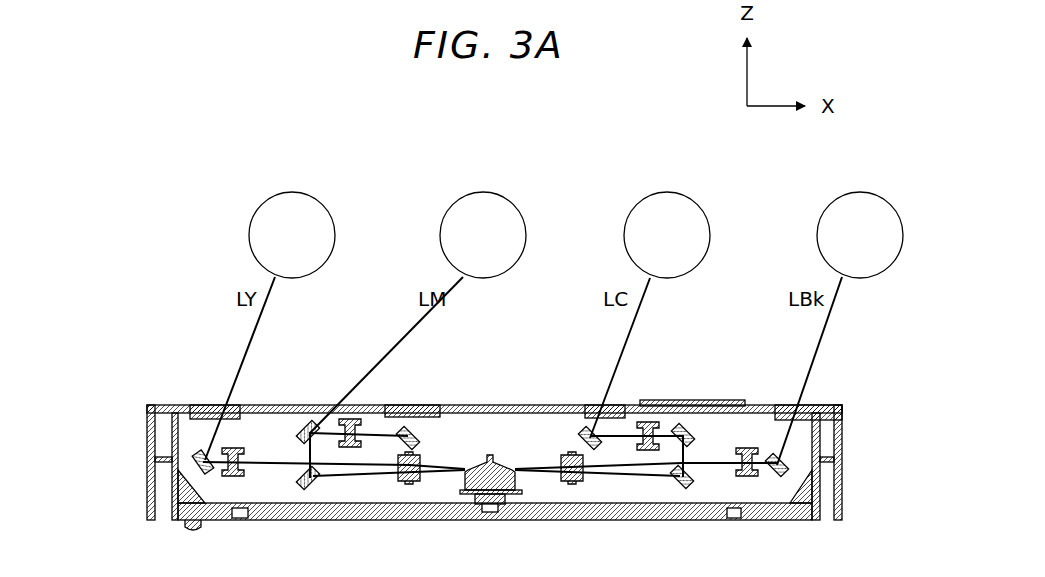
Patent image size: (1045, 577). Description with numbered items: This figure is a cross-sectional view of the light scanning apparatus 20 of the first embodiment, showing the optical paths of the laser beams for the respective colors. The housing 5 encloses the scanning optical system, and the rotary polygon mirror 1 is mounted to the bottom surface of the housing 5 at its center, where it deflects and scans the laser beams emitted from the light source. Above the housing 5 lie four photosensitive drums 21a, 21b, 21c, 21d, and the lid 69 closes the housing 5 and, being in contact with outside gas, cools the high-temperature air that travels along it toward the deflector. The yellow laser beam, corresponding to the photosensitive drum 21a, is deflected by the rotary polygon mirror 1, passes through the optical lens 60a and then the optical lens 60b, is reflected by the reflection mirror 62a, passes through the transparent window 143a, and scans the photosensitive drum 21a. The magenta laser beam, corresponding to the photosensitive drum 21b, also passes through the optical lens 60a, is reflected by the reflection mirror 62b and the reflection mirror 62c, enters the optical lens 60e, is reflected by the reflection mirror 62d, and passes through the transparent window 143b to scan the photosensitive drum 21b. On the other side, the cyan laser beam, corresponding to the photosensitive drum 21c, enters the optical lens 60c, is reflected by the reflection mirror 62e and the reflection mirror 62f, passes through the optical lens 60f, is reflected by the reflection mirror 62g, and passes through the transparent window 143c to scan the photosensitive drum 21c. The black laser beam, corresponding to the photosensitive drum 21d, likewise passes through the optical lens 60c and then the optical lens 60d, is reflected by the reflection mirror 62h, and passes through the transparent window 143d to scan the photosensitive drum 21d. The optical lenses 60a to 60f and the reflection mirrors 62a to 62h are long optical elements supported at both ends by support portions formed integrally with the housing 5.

The rotary polygon mirror 1 is at (497, 463).
The housing 5 is at (640, 521).
The light scanning apparatus 20 is at (142, 448).
The photosensitive drum 21a is at (298, 192).
The photosensitive drum 21b is at (490, 192).
The photosensitive drum 21c is at (674, 192).
The photosensitive drum 21d is at (867, 192).
The optical lens 60a is at (410, 484).
The optical lens 60b is at (240, 448).
The optical lens 60c is at (572, 484).
The optical lens 60d is at (748, 477).
The optical lens 60e is at (352, 419).
The optical lens 60f is at (648, 422).
The reflection mirror 62a is at (193, 467).
The reflection mirror 62b is at (306, 487).
The reflection mirror 62c is at (308, 424).
The reflection mirror 62d is at (418, 438).
The reflection mirror 62e is at (686, 486).
The reflection mirror 62f is at (694, 436).
The reflection mirror 62g is at (584, 430).
The reflection mirror 62h is at (782, 475).
The lid 69 is at (690, 400).
The transparent window 143a is at (222, 405).
The transparent window 143b is at (430, 405).
The transparent window 143c is at (596, 405).
The transparent window 143d is at (810, 405).